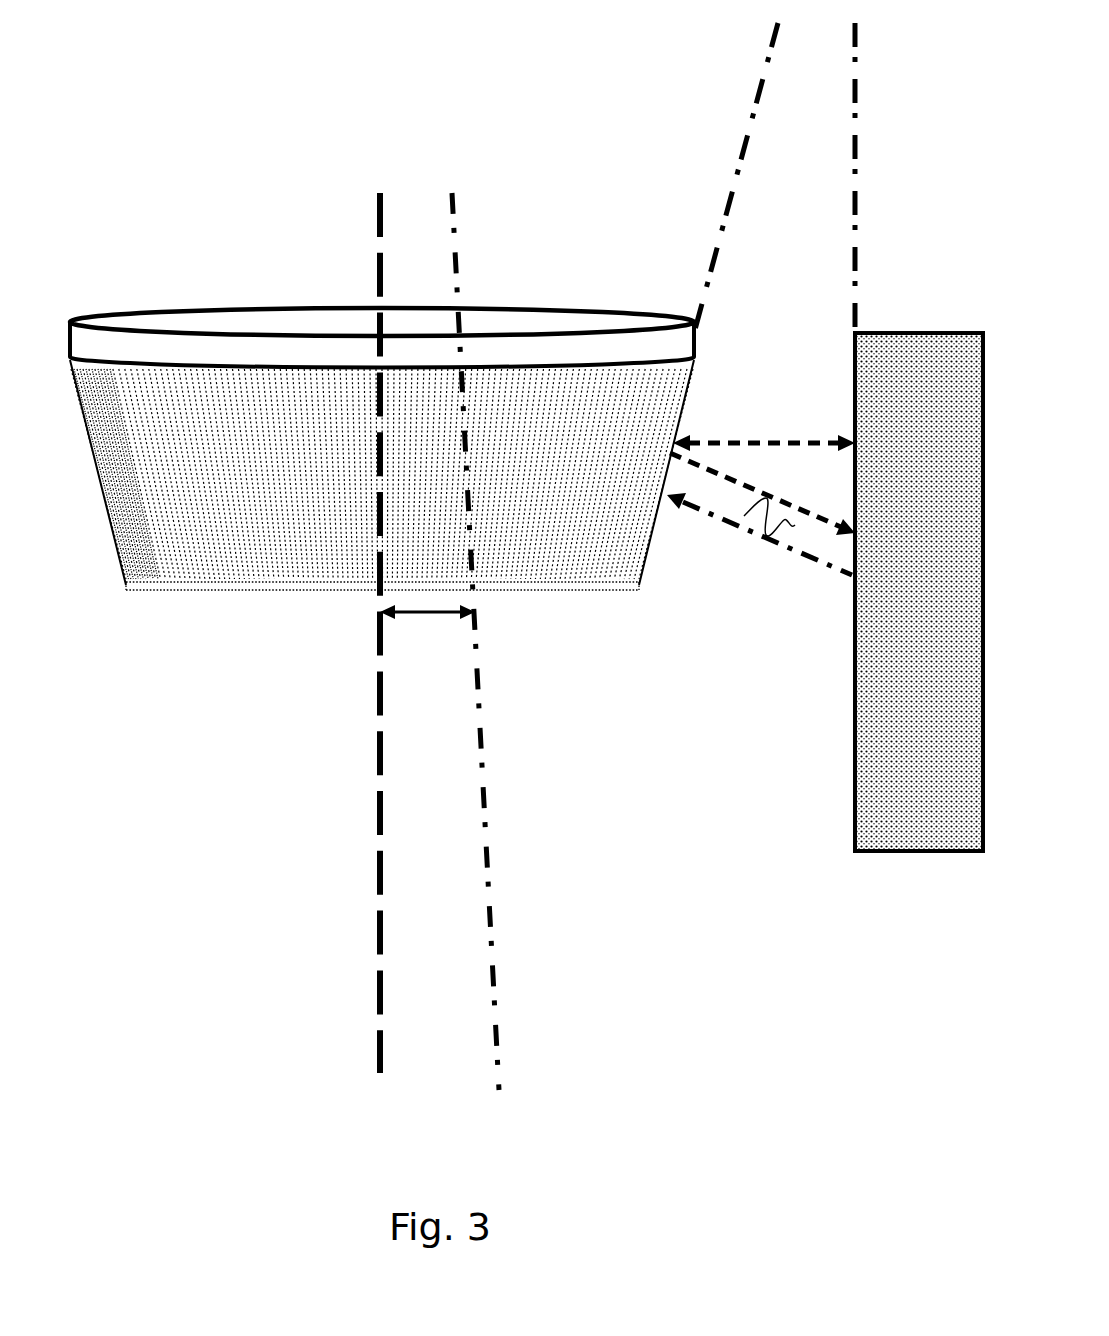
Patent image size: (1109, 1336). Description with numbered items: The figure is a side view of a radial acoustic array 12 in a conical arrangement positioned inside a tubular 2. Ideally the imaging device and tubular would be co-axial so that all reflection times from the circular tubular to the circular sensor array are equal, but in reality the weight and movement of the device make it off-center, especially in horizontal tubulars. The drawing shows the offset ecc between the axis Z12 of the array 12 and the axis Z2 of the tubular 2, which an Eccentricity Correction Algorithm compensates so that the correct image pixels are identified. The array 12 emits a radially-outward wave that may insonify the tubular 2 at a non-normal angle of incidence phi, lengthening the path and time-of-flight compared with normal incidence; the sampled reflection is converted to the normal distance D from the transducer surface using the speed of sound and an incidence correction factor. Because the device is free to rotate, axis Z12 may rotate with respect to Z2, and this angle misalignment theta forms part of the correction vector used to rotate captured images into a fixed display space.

The radial array 12 is at (382, 449).
The tubular 2 is at (919, 592).
The axis of the array Z12 is at (374, 666).
The axis of the tubular Z2 is at (481, 666).
The angle misalignment theta is at (412, 182).
The non-normal angle of incidence phi is at (774, 180).
The normal distance D is at (764, 422).
The offset ecc is at (427, 642).